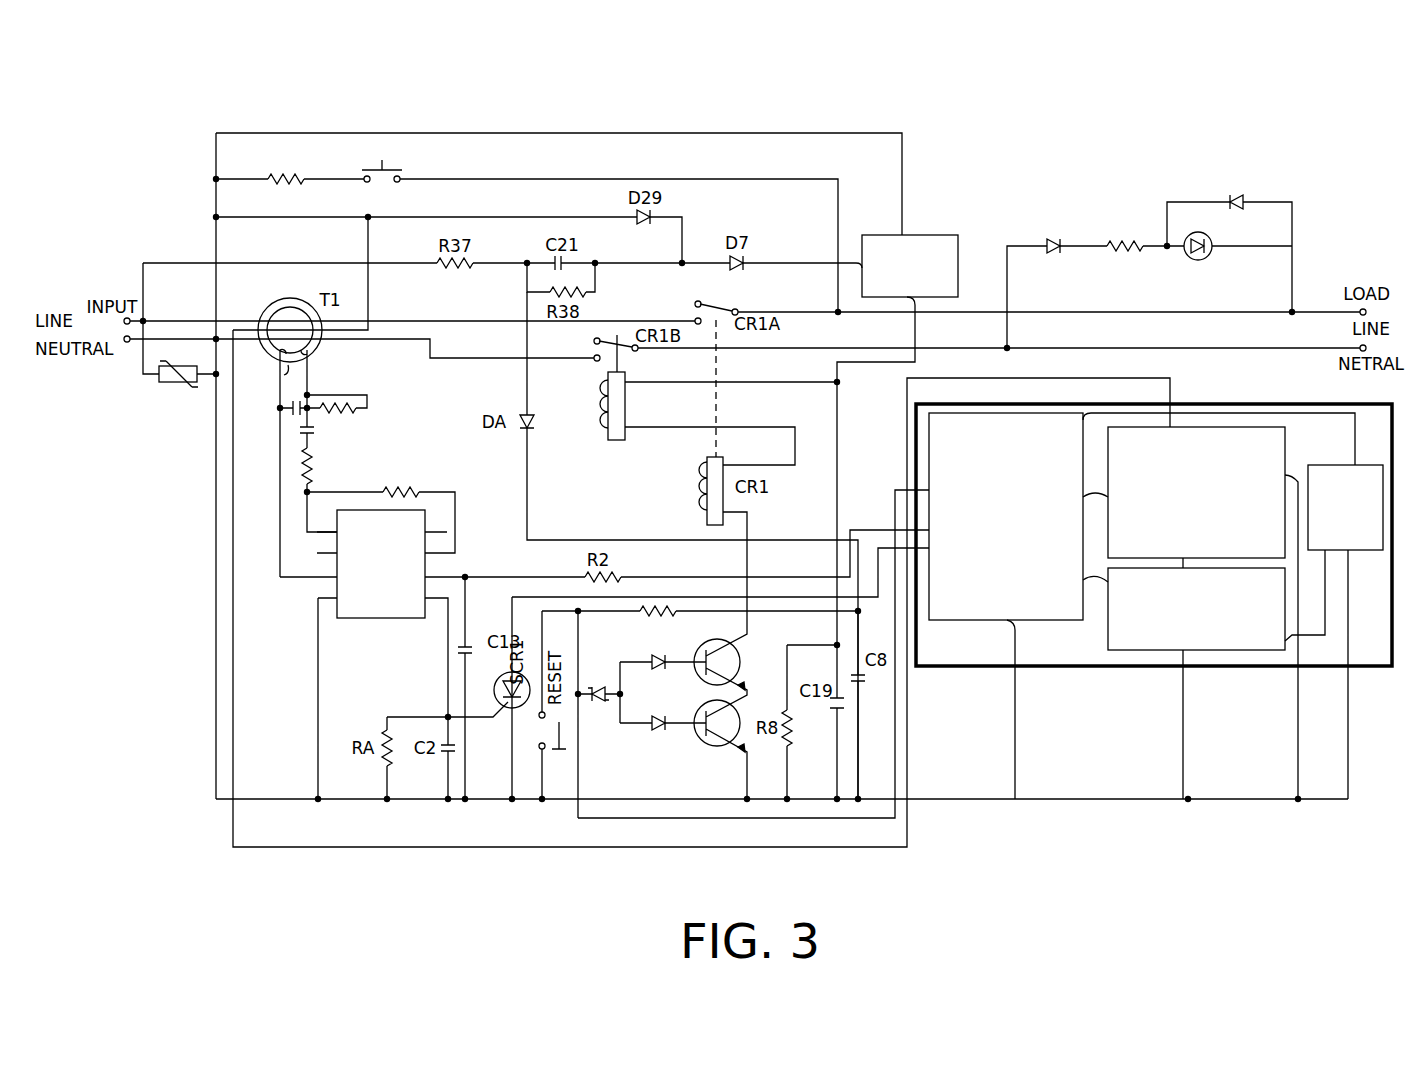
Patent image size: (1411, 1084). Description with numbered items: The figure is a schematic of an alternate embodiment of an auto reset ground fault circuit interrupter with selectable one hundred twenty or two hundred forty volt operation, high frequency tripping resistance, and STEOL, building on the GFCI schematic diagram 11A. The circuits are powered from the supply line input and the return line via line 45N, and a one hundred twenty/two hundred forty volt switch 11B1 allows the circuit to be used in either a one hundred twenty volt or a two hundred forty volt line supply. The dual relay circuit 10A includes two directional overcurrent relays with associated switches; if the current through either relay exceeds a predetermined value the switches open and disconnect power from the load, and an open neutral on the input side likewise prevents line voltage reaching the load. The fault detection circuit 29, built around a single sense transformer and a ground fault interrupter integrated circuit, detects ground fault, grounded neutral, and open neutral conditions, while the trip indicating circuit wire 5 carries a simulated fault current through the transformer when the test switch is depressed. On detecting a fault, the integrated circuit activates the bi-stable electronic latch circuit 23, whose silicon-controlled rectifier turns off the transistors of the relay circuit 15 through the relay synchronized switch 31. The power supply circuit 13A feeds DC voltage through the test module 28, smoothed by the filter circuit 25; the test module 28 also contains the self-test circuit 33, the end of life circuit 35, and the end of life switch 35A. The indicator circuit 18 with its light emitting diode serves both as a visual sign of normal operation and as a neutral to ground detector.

The GFCI schematic diagram 11A is at (634, 121).
The power supply circuit 13A is at (745, 164).
The 120/240 volt switch 11B1 is at (963, 228).
The indicator circuit 18 is at (1146, 183).
The line 45N is at (205, 522).
The trip indicating circuit wire 5 is at (249, 575).
The fault detection circuit 29 is at (304, 648).
The dual relay circuit 10A is at (594, 447).
The bi-stable electronic latch circuit 23 is at (490, 817).
The relay circuit 15 is at (696, 832).
The filter circuit 25 is at (857, 832).
The test module 28 is at (1154, 601).
The relay synchronized switch 31 is at (1006, 516).
The self-test circuit 33 is at (1196, 492).
The end of life circuit 35 is at (1094, 634).
The end of life switch 35A is at (1345, 507).